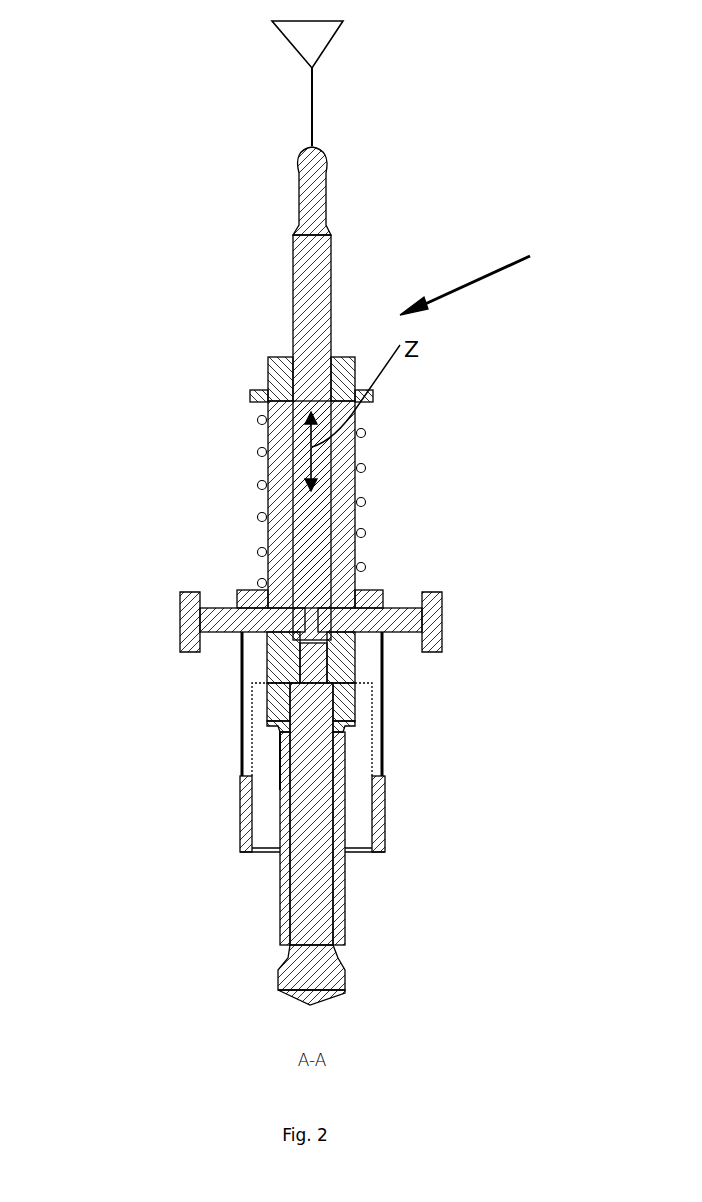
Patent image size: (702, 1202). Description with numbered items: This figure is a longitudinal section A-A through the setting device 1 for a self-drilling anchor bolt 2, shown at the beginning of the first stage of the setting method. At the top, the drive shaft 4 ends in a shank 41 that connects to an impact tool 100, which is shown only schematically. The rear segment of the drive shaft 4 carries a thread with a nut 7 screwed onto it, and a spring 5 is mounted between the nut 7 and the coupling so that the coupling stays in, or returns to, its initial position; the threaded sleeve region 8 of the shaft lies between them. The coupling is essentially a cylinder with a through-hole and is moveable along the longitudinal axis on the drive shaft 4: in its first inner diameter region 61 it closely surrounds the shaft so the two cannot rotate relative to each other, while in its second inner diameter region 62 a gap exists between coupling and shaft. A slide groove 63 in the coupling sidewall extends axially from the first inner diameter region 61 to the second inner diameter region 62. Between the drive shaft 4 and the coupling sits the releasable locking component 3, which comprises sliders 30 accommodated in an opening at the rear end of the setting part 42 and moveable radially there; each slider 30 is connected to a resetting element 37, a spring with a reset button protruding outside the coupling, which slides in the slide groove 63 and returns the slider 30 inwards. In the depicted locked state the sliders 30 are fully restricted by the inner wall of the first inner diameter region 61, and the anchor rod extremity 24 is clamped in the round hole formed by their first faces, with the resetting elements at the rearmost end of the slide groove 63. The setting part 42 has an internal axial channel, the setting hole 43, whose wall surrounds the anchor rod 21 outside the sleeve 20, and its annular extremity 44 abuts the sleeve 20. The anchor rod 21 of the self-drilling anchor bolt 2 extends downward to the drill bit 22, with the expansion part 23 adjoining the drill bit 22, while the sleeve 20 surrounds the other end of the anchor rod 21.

The impact tool 100 is at (307, 83).
The shank 41 is at (298, 176).
The drive shaft 4 is at (305, 515).
The nut 7 is at (268, 370).
The threaded sleeve 8 is at (362, 434).
The setting device 1 is at (471, 280).
The spring 5 is at (240, 594).
The slider 30 is at (244, 608).
The locking component 3 is at (372, 594).
The resetting element 37 is at (443, 623).
The anchor rod extremity 24 is at (360, 665).
The first inner diameter region 61 is at (370, 650).
The setting part 42 is at (365, 713).
The setting hole 43 is at (368, 740).
The self-drilling anchor bolt 2 is at (240, 678).
The slide groove 63 is at (232, 720).
The second inner diameter region 62 is at (240, 806).
The anchor rod 21 is at (345, 885).
The annular extremity 44 is at (285, 757).
The sleeve 20 is at (283, 893).
The expansion part 23 is at (343, 948).
The drill bit 22 is at (345, 993).